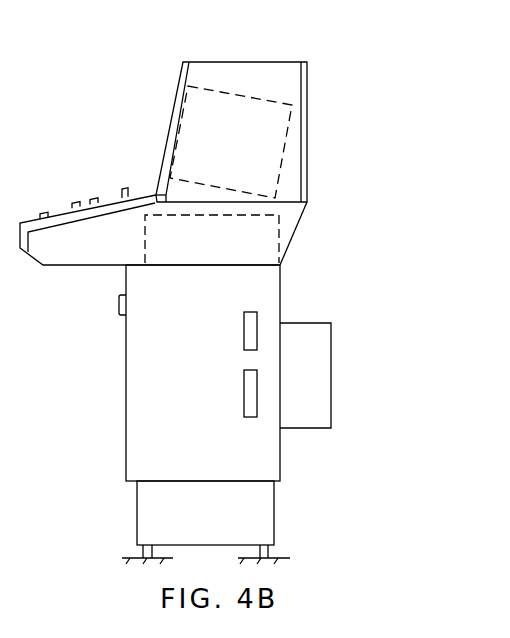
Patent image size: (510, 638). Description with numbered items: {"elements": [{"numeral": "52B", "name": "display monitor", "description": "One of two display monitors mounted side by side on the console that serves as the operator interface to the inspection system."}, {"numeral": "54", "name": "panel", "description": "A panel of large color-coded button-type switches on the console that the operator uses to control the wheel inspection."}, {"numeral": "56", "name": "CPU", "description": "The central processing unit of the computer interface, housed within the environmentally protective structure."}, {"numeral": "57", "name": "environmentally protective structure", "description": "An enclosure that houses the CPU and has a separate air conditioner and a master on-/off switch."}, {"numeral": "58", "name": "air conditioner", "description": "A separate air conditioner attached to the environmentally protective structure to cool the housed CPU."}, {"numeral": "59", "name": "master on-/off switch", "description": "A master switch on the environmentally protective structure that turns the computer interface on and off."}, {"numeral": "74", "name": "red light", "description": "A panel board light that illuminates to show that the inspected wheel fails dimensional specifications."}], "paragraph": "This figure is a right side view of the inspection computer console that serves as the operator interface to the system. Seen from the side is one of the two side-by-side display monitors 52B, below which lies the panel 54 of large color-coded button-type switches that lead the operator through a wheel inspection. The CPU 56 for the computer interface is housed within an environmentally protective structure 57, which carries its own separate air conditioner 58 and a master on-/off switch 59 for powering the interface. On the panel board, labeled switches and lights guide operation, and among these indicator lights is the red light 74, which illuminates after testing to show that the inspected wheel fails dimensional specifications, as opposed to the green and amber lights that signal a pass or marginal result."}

The display monitor 52B is at (282, 177).
The control panel 54 is at (68, 210).
The control housing / shelf 56 is at (280, 238).
The cabinet 57 is at (126, 420).
The side box / coin mechanism housing 58 is at (310, 323).
The coin return 59 is at (120, 317).
The control buttons 74 is at (125, 190).